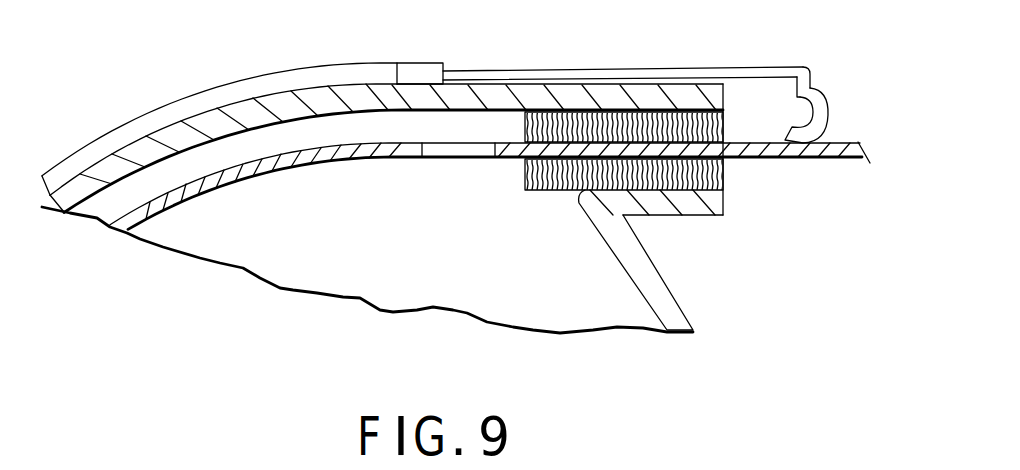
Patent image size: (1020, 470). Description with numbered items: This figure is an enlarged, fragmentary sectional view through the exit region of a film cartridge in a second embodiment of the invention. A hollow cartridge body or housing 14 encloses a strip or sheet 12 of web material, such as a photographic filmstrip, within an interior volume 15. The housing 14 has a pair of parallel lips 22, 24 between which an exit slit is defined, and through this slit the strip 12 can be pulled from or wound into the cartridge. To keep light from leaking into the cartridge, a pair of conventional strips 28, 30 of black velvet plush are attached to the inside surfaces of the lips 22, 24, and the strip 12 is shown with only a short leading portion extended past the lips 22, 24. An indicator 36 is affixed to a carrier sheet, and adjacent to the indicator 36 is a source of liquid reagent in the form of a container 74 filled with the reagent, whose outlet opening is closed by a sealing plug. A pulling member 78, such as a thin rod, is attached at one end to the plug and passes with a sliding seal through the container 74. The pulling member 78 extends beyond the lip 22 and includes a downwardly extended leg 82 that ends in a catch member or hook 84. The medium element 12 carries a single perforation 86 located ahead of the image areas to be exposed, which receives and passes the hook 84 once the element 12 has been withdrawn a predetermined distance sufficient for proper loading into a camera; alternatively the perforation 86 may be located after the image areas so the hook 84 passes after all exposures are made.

The strip or sheet of web material 12 is at (182, 187).
The cartridge body or housing 14 is at (662, 288).
The interior volume 15 is at (464, 253).
The lip 22 is at (692, 97).
The lip 24 is at (697, 205).
The strip of black velvet plush 28 is at (710, 132).
The strip of black velvet plush 30 is at (723, 172).
The indicator 36 is at (128, 118).
The container 74 is at (423, 72).
The pulling member 78 is at (593, 68).
The downwardly extended leg 82 is at (809, 82).
The catch member or hook 84 is at (821, 115).
The perforation 86 is at (466, 163).